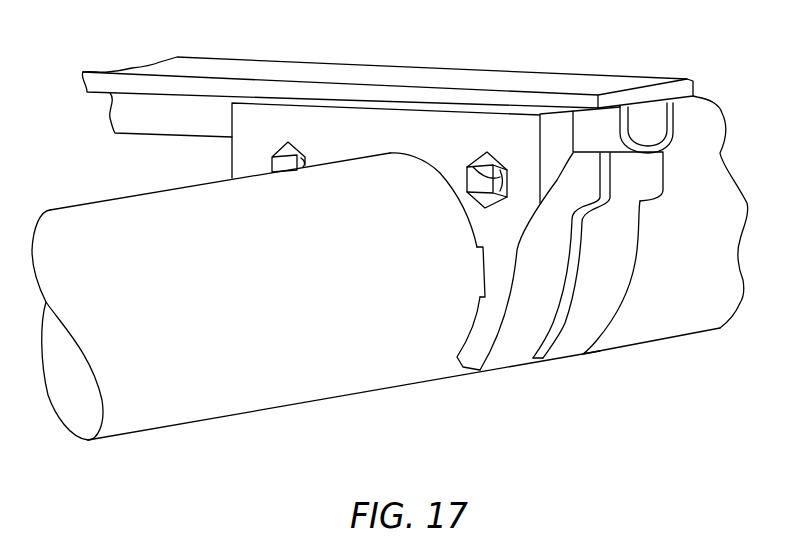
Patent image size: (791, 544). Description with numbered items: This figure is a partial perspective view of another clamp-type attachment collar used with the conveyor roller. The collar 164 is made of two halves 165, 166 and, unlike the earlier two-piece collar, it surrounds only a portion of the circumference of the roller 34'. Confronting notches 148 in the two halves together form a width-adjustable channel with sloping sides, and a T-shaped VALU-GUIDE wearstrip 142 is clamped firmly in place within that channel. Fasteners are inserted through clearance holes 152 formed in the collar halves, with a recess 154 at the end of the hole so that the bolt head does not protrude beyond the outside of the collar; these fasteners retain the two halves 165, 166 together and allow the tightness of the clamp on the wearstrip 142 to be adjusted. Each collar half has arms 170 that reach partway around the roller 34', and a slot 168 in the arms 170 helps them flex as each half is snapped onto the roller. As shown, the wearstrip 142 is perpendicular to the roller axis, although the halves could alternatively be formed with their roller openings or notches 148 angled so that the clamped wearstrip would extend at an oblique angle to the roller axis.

The roller 34' is at (316, 296).
The wearstrip 142 is at (650, 100).
The notches 148 is at (553, 172).
The clearance holes 152 is at (473, 163).
The recess 154 is at (272, 163).
The collar 164 is at (569, 260).
The collar half 165 is at (622, 266).
The collar half 166 is at (470, 343).
The slot 168 is at (480, 282).
The arms 170 is at (527, 320).